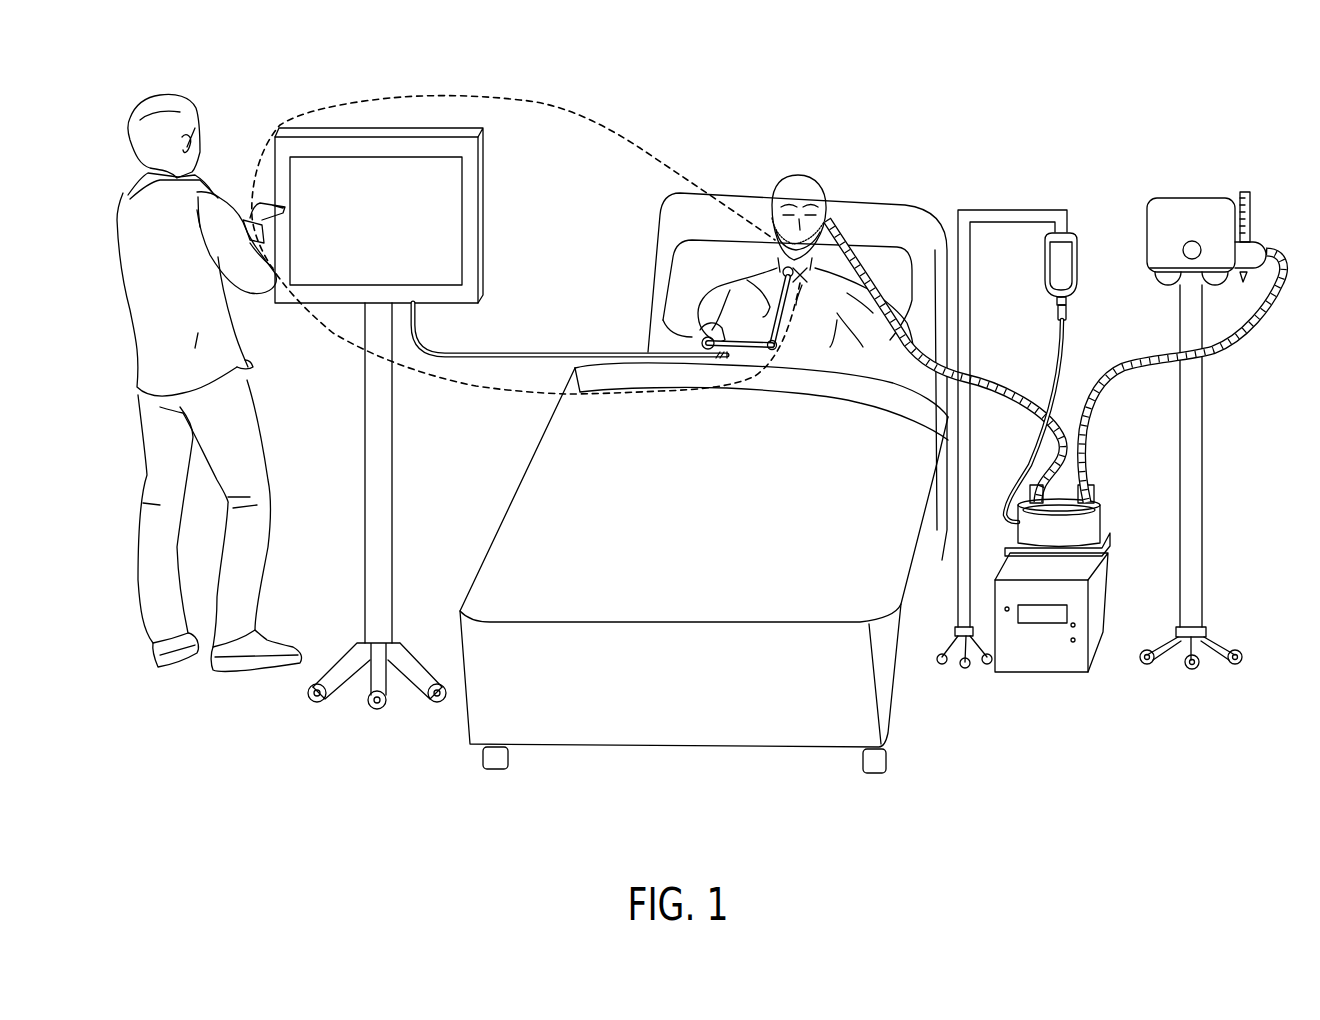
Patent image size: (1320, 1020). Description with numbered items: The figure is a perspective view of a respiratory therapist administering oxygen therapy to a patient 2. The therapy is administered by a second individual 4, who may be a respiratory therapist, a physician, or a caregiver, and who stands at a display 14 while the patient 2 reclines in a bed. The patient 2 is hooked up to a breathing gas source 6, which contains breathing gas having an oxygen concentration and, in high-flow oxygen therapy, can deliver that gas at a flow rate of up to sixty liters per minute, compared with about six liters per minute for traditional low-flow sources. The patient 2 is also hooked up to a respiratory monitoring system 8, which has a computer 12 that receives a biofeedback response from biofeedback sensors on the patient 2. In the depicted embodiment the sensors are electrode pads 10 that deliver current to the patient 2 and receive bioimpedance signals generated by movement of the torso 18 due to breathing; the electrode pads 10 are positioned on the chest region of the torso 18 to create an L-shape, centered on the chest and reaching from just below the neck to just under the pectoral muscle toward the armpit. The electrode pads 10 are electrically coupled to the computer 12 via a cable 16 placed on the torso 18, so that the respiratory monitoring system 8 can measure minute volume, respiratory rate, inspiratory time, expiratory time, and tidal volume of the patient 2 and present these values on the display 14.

The patient 2 is at (800, 175).
The second individual 4 is at (167, 96).
The breathing gas source 6 is at (927, 703).
The respiratory monitoring system 8 is at (557, 104).
The electrode pads 10 is at (768, 283).
The computer 12 is at (452, 128).
The display 14 is at (463, 183).
The cable 16 is at (538, 352).
The torso 18 is at (877, 290).